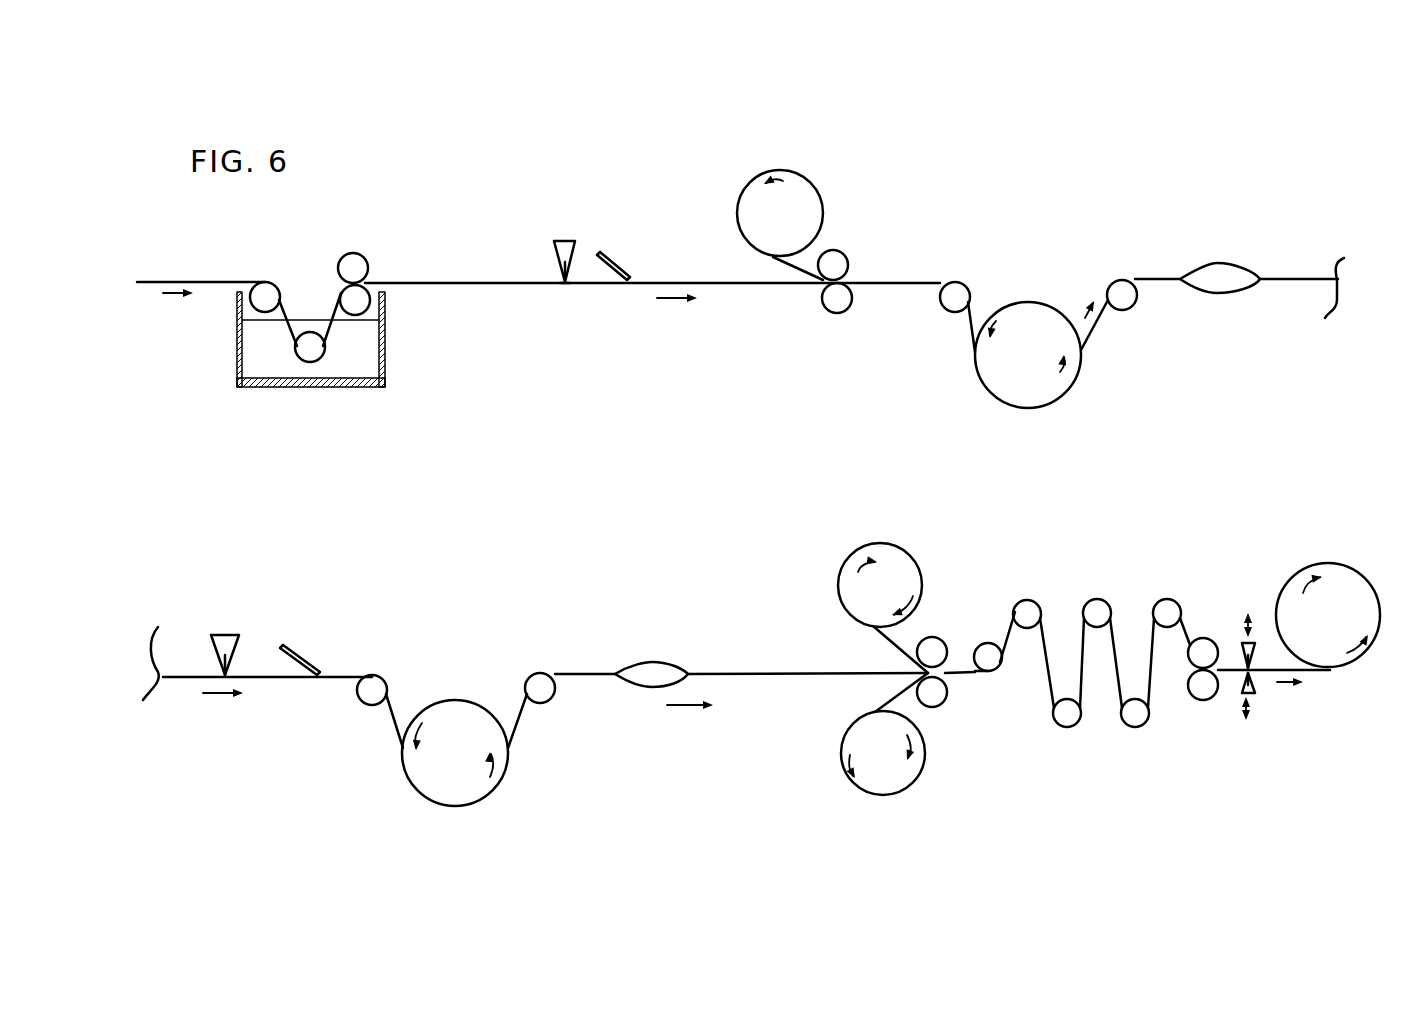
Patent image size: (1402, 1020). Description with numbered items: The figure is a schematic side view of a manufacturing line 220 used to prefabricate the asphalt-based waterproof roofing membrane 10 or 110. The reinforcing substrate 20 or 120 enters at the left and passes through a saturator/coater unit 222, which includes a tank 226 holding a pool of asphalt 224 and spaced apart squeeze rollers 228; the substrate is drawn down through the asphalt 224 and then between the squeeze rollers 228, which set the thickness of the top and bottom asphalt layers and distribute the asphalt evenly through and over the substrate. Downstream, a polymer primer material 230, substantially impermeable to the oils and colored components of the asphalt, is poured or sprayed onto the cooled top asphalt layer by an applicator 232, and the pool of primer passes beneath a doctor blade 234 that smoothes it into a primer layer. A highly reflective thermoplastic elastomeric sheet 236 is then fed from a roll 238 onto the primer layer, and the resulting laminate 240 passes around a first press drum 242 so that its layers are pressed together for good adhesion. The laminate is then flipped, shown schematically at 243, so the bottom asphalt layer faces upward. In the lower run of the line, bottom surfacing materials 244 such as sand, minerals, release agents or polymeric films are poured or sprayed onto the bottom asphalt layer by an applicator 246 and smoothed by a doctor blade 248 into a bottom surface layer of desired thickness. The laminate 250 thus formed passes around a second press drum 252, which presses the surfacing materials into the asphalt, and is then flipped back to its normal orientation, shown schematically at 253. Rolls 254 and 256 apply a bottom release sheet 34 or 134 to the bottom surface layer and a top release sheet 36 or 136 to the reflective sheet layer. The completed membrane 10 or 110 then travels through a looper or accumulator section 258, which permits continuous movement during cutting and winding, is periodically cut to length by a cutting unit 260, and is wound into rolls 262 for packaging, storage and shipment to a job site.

The prefabricated asphalt-based waterproof roofing membrane 10 is at (1318, 677).
The prefabricated asphalt-based waterproof roofing membrane 110 is at (1274, 678).
The reinforcing substrate 20 is at (160, 281).
The reinforcing substrate 120 is at (173, 275).
The bottom release sheet 34 is at (890, 700).
The bottom release sheet 134 is at (901, 692).
The top release sheet 36 is at (883, 632).
The top release sheet 136 is at (900, 649).
The manufacturing line 220 is at (980, 176).
The saturator/coater unit 222 is at (420, 375).
The asphalt 224 is at (358, 353).
The tank 226 is at (319, 388).
The squeeze rollers 228 is at (358, 253).
The polymer primer material 230 is at (563, 278).
The applicator 232 is at (565, 240).
The doctor blade 234 is at (607, 260).
The highly reflective thermoplastic elastomeric sheet 236 is at (773, 260).
The roll 238 is at (794, 241).
The laminate 240 is at (905, 282).
The first press drum 242 is at (1052, 344).
The flipping of the laminate 243 is at (1217, 263).
The bottom surfacing material 244 is at (223, 673).
The applicator 246 is at (225, 635).
The doctor blade 248 is at (295, 652).
The laminate 250 is at (363, 675).
The second press drum 252 is at (470, 739).
The flipping of the laminate 253 is at (650, 663).
The roll 254 is at (883, 762).
The roll 256 is at (887, 577).
The looper or accumulator section 258 is at (1105, 582).
The cutting unit 260 is at (1242, 743).
The rolls 262 is at (1328, 615).